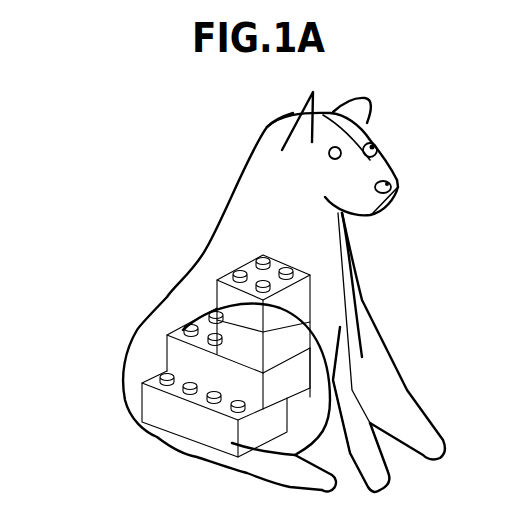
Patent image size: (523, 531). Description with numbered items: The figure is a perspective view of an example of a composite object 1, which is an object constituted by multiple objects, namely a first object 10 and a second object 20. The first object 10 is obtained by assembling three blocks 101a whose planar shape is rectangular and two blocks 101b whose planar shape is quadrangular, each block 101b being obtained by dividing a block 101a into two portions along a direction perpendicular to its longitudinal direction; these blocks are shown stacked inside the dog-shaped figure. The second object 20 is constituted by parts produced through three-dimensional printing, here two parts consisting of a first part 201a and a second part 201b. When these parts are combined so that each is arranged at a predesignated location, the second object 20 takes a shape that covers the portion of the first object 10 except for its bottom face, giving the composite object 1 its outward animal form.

The composite object 1 is at (368, 125).
The second object 20 is at (150, 327).
The first part 201a is at (248, 190).
The second part 201b is at (386, 162).
The first object 10 is at (142, 435).
The block 101a is at (312, 353).
The block 101b is at (312, 288).